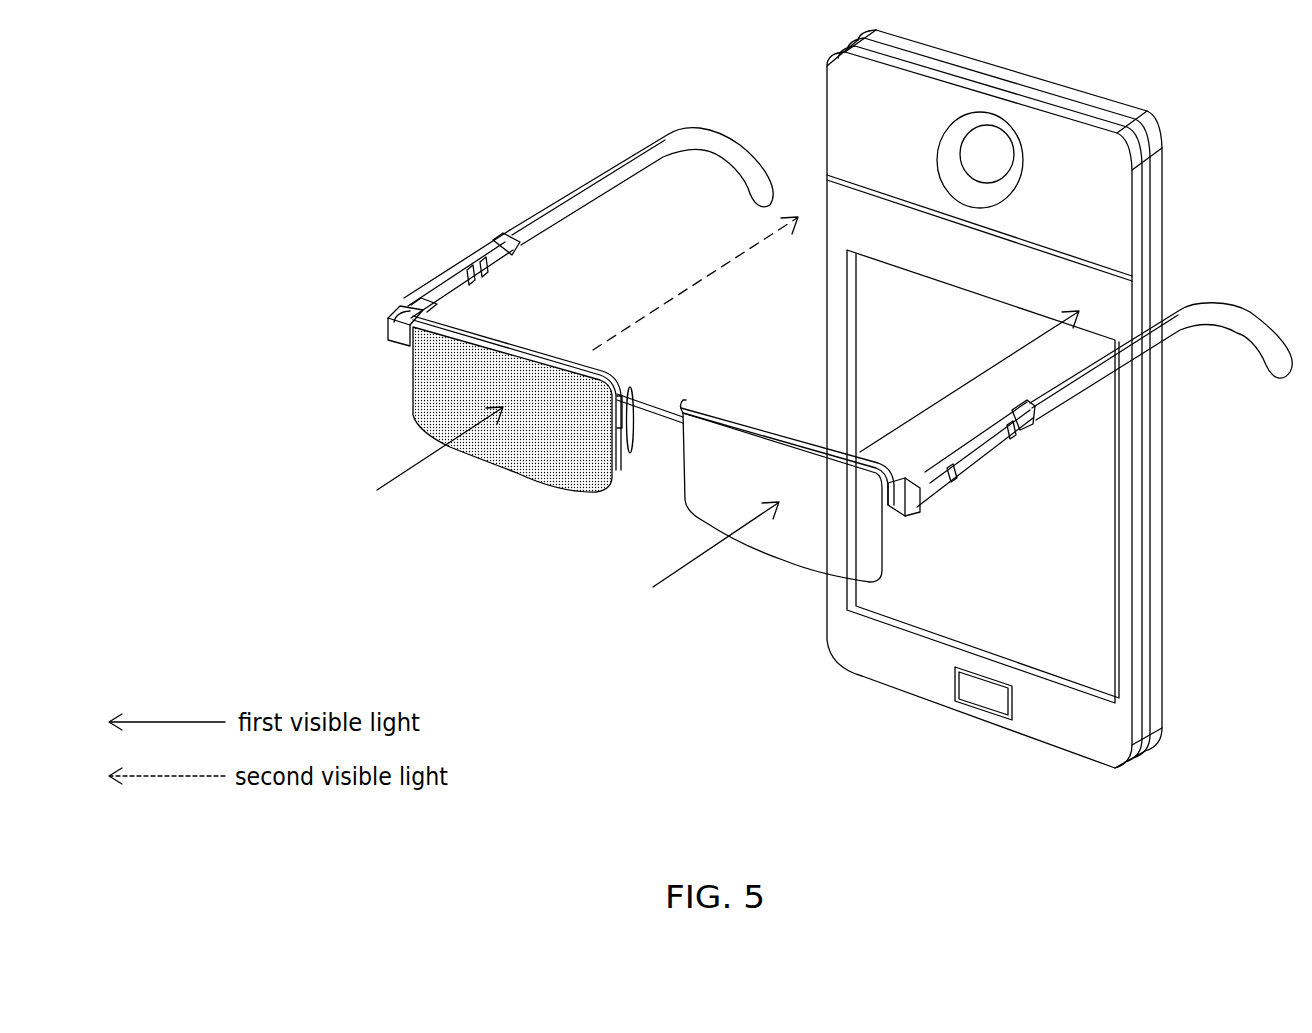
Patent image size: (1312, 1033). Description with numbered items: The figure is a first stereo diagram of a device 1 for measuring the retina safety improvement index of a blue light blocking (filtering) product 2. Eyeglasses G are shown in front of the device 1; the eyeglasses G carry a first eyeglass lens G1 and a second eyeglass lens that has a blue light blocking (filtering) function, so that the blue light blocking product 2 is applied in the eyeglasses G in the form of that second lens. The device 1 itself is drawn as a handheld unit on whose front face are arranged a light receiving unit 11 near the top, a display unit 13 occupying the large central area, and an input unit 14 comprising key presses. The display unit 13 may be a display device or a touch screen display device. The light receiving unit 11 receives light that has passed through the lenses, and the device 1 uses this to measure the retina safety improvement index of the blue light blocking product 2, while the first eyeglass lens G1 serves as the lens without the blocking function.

The device 1 is at (1162, 104).
The light receiving unit 11 is at (967, 152).
The display unit 13 is at (1097, 570).
The input unit 14 is at (823, 320).
The eyeglasses G is at (404, 268).
The first eyeglass lens G1 is at (790, 548).
The blue light blocking (filtering) product 2 is at (406, 416).